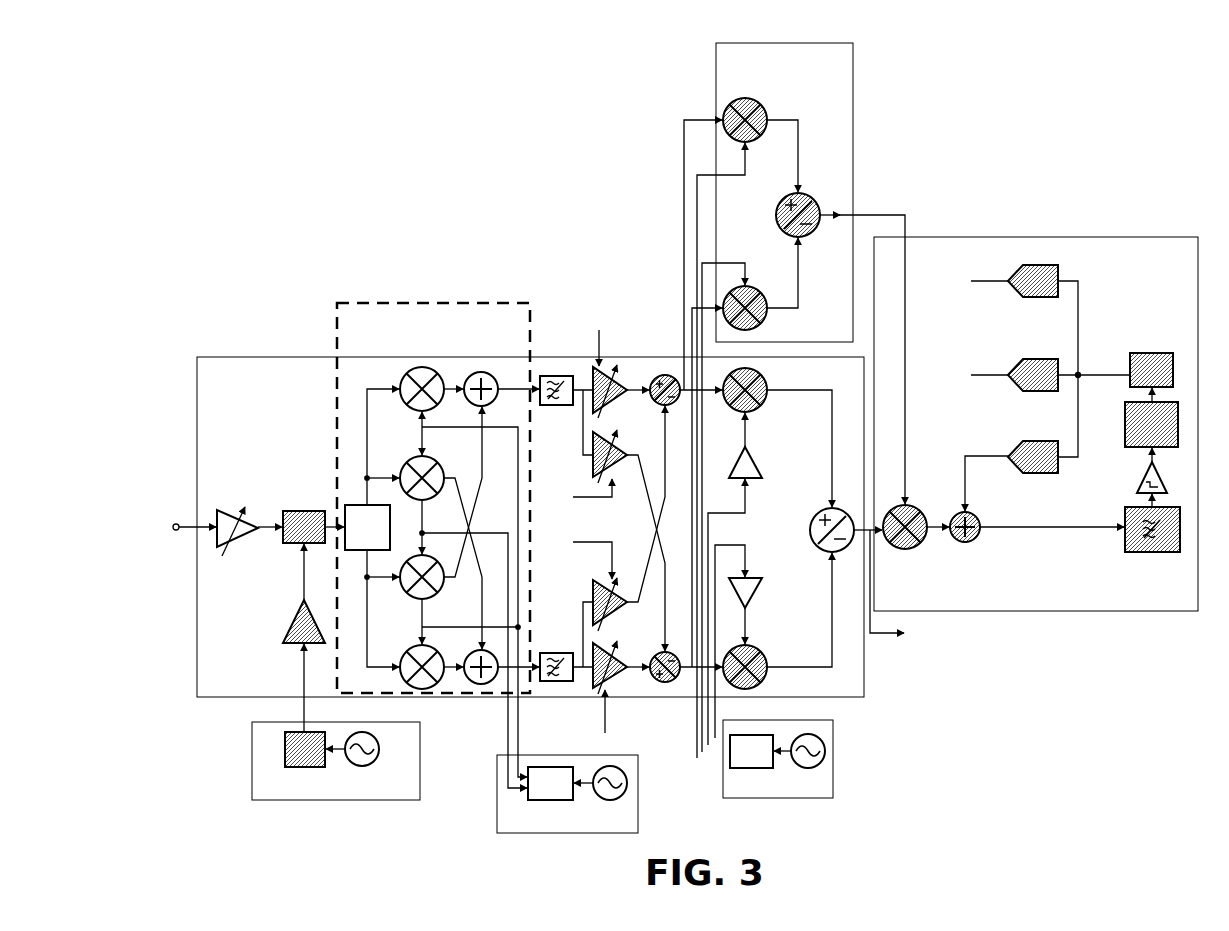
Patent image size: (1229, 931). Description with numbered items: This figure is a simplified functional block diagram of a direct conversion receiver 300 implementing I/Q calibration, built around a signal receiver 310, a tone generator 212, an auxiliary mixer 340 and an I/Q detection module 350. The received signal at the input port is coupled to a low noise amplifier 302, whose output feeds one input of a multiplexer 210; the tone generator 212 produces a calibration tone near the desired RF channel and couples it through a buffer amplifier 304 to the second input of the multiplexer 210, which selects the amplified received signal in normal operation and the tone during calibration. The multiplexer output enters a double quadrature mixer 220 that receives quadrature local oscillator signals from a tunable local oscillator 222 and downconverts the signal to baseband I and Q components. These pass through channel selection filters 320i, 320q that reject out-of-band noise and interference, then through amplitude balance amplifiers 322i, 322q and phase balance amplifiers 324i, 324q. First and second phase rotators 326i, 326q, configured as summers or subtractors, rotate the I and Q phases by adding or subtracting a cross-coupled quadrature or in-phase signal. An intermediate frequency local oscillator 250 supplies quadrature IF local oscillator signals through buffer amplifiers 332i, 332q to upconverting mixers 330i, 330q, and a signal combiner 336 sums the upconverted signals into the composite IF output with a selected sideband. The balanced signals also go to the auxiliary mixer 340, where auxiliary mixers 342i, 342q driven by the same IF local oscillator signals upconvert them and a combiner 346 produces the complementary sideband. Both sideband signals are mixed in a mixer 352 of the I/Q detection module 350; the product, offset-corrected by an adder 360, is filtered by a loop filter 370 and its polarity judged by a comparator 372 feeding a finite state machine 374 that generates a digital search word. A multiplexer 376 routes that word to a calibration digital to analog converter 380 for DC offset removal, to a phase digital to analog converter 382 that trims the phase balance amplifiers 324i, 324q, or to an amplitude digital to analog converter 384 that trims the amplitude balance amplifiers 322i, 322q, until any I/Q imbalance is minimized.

The direct conversion receiver 300 is at (320, 136).
The signal receiver 310 is at (260, 357).
The LNA 302 is at (214, 508).
The multiplexer 210 is at (283, 508).
The buffer amplifier 304 is at (283, 635).
The double quadrature mixer 220 is at (497, 338).
The channel selection filter LI 320i is at (558, 392).
The channel selection filter LQ 320q is at (559, 668).
The in-phase amplitude balance amplifier 322i is at (620, 392).
The quadrature amplitude balance amplifier 322q is at (626, 668).
The in-phase phase balance amplifier 324i is at (615, 456).
The quadrature phase balance amplifier 324q is at (612, 604).
The first phase rotator 326i is at (665, 381).
The second phase rotator 326q is at (674, 678).
The upconverting mixer M1 330i is at (790, 377).
The upconverting mixer M2 330q is at (767, 688).
The I buffer amplifier 332i is at (782, 463).
The Q buffer amplifier 332q is at (762, 600).
The signal combiner S1 336 is at (810, 540).
The auxiliary mixer AUMX 340 is at (853, 125).
The I auxiliary mixer 342i is at (758, 143).
The Q auxiliary mixer 342q is at (776, 282).
The combiner S2 346 is at (828, 186).
The I/Q detection module 350 is at (1103, 611).
The mixer MD 352 is at (940, 503).
The adder SD 360 is at (964, 545).
The loop filter LF 370 is at (1125, 551).
The comparator CM1 372 is at (1180, 477).
The finite state machine FSM 374 is at (1125, 420).
The multiplexer 376 is at (1130, 360).
The calibration digital to analog converter DDAC 380 is at (1028, 473).
The PDAC 382 is at (1028, 390).
The ADAC 384 is at (1028, 297).
The tone generator 212 is at (327, 800).
The LO 222 is at (507, 833).
The IF LO 250 is at (745, 798).